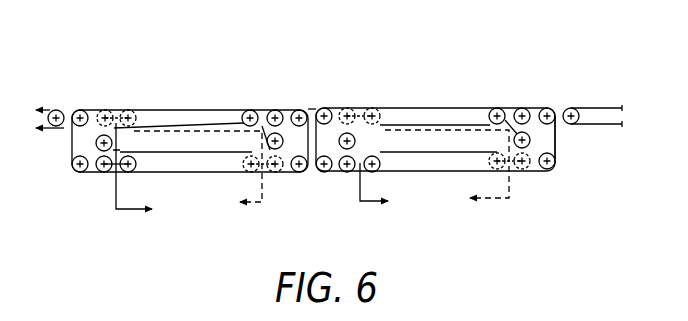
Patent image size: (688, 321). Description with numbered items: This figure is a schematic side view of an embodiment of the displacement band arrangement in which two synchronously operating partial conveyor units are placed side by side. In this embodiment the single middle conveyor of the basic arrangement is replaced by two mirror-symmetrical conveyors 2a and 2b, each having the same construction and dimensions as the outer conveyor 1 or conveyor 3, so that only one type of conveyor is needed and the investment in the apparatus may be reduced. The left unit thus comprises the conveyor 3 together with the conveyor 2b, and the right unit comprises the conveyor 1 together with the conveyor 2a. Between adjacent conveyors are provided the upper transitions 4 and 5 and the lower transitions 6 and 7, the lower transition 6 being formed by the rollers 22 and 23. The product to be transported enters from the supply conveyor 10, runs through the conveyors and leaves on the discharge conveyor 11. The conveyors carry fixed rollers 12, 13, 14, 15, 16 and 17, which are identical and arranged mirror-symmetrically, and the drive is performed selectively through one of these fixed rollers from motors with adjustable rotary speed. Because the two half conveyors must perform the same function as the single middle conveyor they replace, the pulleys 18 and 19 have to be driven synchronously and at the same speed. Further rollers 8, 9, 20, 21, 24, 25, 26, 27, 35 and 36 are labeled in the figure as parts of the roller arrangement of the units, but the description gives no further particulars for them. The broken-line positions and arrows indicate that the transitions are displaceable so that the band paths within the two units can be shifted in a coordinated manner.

The conveyor 1 is at (537, 106).
The conveyor 2a is at (470, 104).
The conveyor 2b is at (302, 108).
The conveyor 3 is at (195, 109).
The upper transition 4 is at (510, 107).
The upper transition 5 is at (265, 108).
The lower transition 6 is at (350, 173).
The lower transition 7 is at (110, 170).
The exit guide 8 is at (568, 105).
The entry roller 9 is at (70, 110).
The supply conveyor 10 is at (598, 104).
The discharge conveyor 11 is at (58, 106).
The fixed roller 12 is at (558, 105).
The fixed roller 13 is at (556, 168).
The fixed roller 14 is at (529, 138).
The fixed roller 15 is at (82, 112).
The fixed roller 16 is at (112, 130).
The fixed roller 17 is at (71, 158).
The pulley 18 is at (285, 173).
The pulley 19 is at (362, 112).
The roller 20 is at (497, 107).
The roller 21 is at (518, 106).
The roller 22 is at (372, 172).
The roller 23 is at (347, 171).
The roller 24 is at (249, 107).
The roller 25 is at (275, 108).
The roller 26 is at (130, 175).
The roller 27 is at (90, 173).
The roller 35 is at (320, 108).
The movable roller pair 36 is at (338, 108).